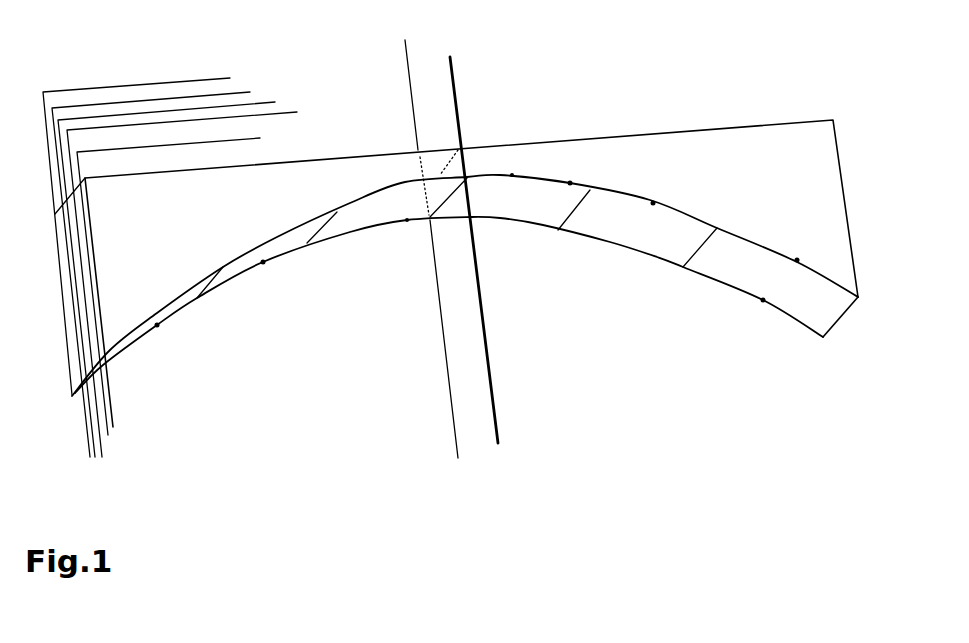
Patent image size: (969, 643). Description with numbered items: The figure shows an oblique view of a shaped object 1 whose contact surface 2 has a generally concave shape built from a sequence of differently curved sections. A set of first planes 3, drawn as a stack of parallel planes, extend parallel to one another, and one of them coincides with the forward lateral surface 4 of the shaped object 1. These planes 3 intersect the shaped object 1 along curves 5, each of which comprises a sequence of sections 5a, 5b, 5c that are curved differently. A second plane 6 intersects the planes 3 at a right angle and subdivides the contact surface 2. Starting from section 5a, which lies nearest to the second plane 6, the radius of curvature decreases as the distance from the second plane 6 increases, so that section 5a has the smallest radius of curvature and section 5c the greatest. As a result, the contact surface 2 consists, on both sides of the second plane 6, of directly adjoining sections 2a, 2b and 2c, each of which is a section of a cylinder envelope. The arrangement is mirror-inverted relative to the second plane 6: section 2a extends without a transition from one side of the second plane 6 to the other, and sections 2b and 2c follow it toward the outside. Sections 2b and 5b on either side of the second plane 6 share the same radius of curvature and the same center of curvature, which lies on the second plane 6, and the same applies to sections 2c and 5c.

The shaped object 1 is at (722, 148).
The contact surface 2 is at (367, 213).
The section of the contact surface 2a is at (538, 207).
The section of the contact surface 2b is at (672, 243).
The section of the contact surface 2c is at (817, 317).
The first planes 3 is at (255, 165).
The forward lateral surface 4 is at (813, 223).
The curves 5 is at (570, 183).
The section of the curve 5a is at (512, 175).
The section of the curve 5b is at (653, 203).
The section of the curve 5c is at (797, 260).
The second plane 6 is at (477, 402).